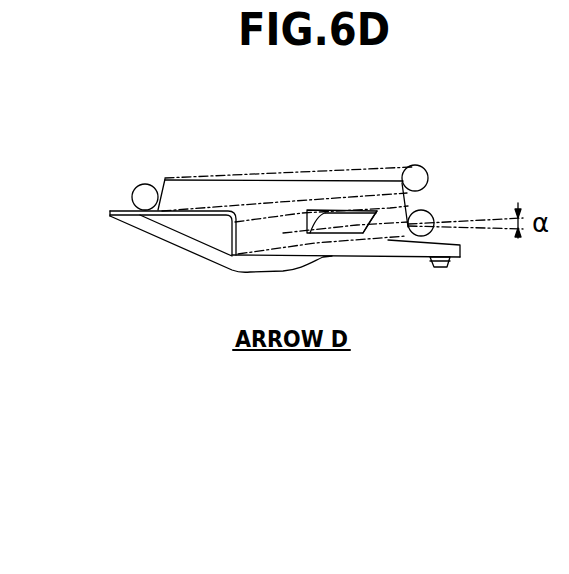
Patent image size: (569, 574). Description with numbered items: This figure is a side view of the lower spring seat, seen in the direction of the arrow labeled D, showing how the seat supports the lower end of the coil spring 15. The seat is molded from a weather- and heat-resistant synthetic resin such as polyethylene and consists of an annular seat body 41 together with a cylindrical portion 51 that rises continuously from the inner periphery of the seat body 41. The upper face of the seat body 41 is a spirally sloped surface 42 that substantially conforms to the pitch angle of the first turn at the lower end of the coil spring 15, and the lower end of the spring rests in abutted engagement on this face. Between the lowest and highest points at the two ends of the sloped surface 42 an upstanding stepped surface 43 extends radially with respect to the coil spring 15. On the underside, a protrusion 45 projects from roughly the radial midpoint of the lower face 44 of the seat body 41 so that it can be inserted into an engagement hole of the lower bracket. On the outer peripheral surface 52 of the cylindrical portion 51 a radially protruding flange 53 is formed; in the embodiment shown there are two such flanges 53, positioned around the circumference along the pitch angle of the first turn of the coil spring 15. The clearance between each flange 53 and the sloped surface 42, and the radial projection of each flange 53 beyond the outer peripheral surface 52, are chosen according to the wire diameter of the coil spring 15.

The coil spring 15 is at (432, 216).
The seat body 41 is at (454, 241).
The spirally sloped surface 42 is at (127, 209).
The stepped surface 43 is at (237, 234).
The lower face 44 is at (413, 259).
The protrusion 45 is at (450, 266).
The cylindrical portion 51 is at (303, 181).
The outer peripheral surface 52 is at (262, 212).
The flange 53 is at (350, 212).